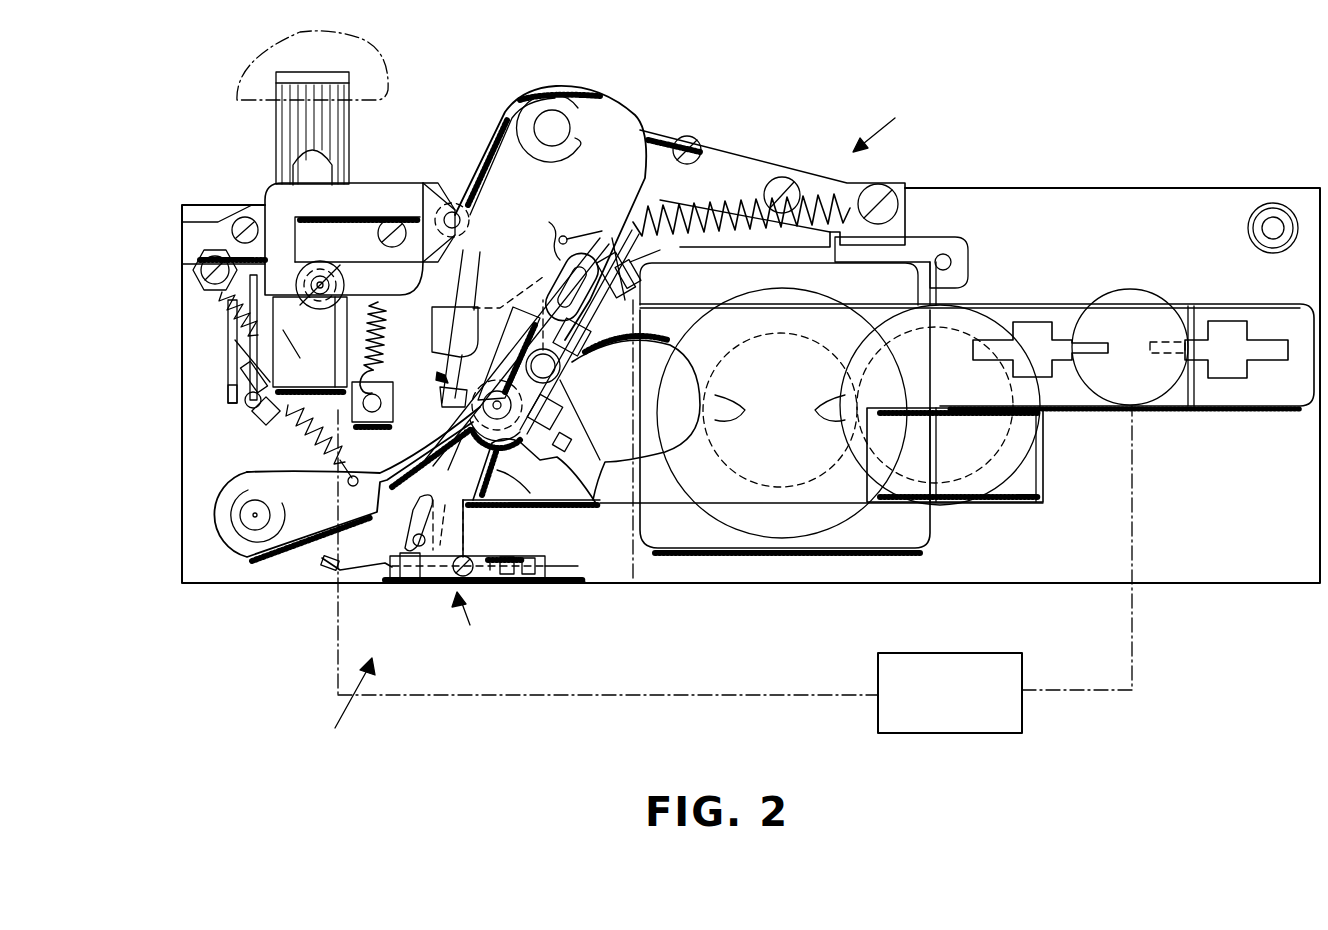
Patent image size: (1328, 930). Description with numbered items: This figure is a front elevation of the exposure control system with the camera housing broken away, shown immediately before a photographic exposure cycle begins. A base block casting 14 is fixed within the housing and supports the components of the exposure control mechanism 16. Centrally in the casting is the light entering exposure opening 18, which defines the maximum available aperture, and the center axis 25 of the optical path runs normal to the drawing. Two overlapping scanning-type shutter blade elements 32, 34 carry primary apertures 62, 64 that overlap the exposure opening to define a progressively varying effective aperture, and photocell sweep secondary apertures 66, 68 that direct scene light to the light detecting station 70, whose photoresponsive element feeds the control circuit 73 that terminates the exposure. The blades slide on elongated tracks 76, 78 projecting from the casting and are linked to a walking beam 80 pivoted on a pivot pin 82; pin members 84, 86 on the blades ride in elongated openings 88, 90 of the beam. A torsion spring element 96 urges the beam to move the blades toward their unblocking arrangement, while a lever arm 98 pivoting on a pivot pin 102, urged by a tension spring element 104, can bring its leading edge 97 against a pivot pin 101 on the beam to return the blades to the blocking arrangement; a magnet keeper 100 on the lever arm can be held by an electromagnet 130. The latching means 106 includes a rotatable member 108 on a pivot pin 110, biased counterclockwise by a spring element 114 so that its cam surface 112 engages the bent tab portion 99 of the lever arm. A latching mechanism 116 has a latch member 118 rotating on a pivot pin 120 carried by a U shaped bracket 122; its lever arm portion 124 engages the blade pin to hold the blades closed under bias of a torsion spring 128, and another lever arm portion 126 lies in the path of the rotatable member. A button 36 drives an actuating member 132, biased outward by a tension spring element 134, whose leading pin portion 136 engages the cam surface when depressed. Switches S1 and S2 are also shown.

The base block casting 14 is at (1200, 234).
The exposure control mechanism 16 is at (886, 130).
The light entering exposure opening 18 is at (775, 468).
The center axis 25 is at (782, 408).
The shutter blade element 32 is at (670, 350).
The shutter blade element 34 is at (570, 495).
The button 36 is at (250, 48).
The primary aperture 62 is at (985, 445).
The primary aperture 64 is at (588, 488).
The photocell sweep secondary aperture 66 is at (1230, 375).
The photocell sweep secondary aperture 68 is at (1050, 400).
The light detecting station 70 is at (1170, 395).
The control circuit 73 is at (1000, 735).
The elongated track 76 is at (936, 290).
The elongated track 78 is at (930, 520).
The walking beam 80 is at (513, 490).
The pivot pin 82 is at (505, 404).
The pin member 84 is at (562, 232).
The pin member 86 is at (418, 560).
The elongated opening 88 is at (560, 297).
The elongated opening 90 is at (428, 482).
The torsion spring element 96 is at (497, 470).
The leading edge 97 is at (470, 318).
The lever arm 98 is at (640, 198).
The bent tab portion 99 is at (483, 408).
The magnet keeper 100 is at (460, 228).
The pivot pin 101 is at (553, 312).
The pivot pin 102 is at (560, 128).
The tension spring element 104 is at (745, 195).
The latching means 106 is at (332, 701).
The rotatable member 108 is at (376, 438).
The pivot pin 110 is at (258, 525).
The cam surface 112 is at (400, 432).
The spring element 114 is at (325, 455).
The latching mechanism 116 is at (484, 602).
The latch member 118 is at (485, 555).
The pivot pin 120 is at (575, 566).
The U shaped bracket 122 is at (395, 578).
The lever arm portion 124 is at (463, 500).
The lever arm portion 126 is at (315, 560).
The torsion spring 128 is at (505, 580).
The electromagnet 130 is at (365, 180).
The actuating member 132 is at (275, 150).
The tension spring element 134 is at (380, 340).
The leading pin portion 136 is at (360, 382).
The switch S1 is at (215, 368).
The switch S2 is at (635, 275).